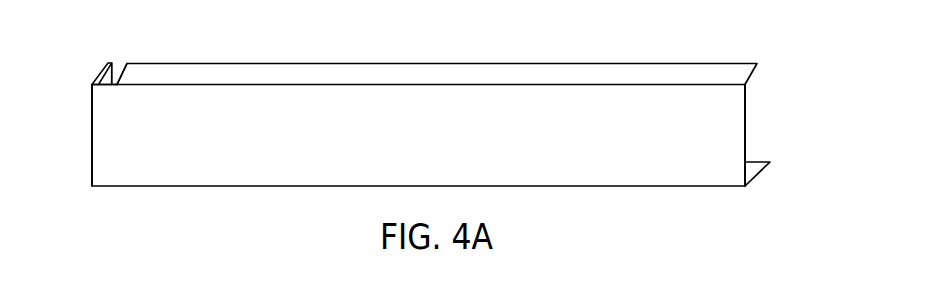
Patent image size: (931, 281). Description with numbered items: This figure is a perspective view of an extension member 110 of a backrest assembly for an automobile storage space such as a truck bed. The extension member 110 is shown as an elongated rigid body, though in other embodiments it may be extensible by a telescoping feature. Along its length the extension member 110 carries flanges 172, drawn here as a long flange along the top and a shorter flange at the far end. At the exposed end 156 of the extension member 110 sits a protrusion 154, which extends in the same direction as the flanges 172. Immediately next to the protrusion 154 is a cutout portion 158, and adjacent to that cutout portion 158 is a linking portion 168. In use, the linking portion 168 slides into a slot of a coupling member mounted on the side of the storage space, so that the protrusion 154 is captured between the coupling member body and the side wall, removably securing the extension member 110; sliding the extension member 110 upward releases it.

The second extension member 110 is at (282, 207).
The protrusion 154 is at (94, 81).
The exposed end 156 is at (758, 118).
The cutout portion 158 is at (122, 57).
The linking portion 168 is at (108, 86).
The flanges 172 is at (447, 63).